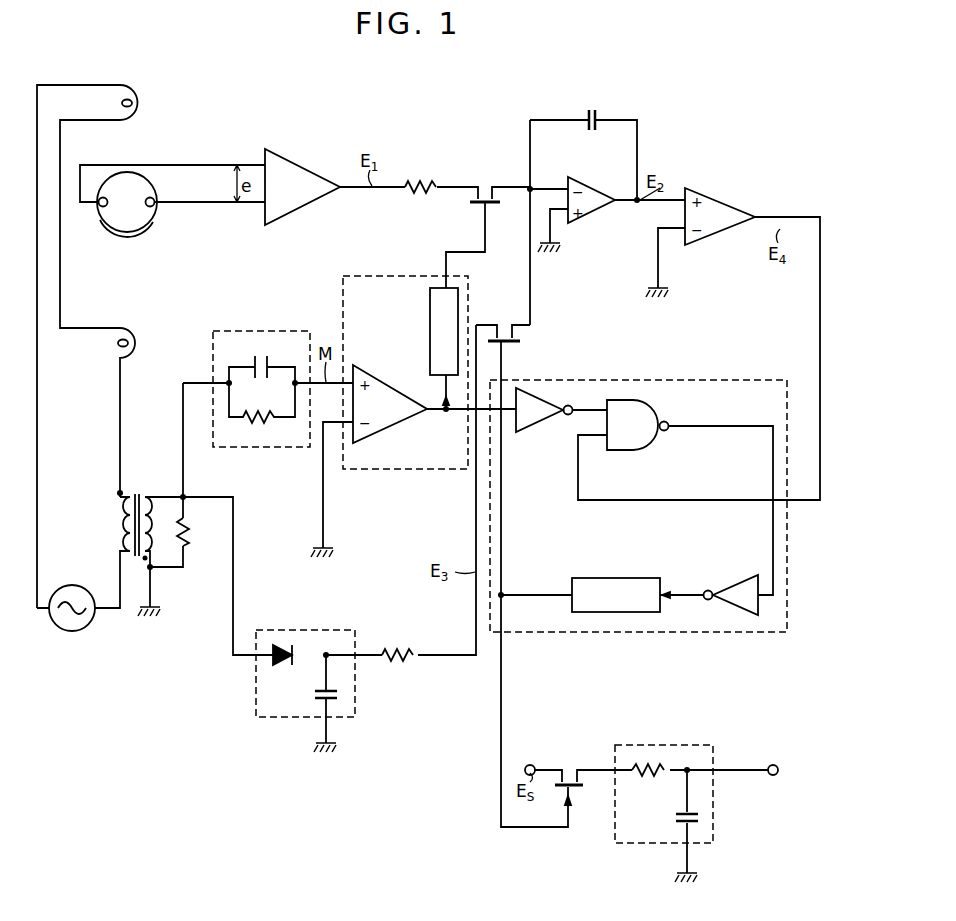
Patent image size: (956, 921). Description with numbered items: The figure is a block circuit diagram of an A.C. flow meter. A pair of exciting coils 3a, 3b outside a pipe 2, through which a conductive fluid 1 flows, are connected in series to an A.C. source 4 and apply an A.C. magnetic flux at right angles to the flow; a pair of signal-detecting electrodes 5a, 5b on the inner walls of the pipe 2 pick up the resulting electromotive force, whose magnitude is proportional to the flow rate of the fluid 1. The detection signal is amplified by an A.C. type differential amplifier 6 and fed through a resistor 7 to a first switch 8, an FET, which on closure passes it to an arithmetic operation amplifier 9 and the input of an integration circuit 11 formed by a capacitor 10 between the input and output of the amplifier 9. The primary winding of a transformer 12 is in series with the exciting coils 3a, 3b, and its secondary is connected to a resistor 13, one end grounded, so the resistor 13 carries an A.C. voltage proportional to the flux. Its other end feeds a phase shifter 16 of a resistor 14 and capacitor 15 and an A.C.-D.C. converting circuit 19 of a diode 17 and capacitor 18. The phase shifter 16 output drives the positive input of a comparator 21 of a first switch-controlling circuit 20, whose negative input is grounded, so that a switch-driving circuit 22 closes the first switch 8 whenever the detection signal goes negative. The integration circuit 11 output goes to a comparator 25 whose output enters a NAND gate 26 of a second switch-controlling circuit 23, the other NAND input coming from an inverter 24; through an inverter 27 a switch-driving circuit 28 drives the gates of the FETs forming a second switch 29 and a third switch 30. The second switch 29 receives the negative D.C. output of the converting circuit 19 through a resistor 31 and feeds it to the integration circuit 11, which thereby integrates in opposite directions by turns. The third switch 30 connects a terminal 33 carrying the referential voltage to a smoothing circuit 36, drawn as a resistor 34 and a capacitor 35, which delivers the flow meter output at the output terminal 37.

The conductive fluid 1 is at (143, 186).
The pipe 2 is at (150, 226).
The exciting coil 3a is at (132, 103).
The exciting coil 3b is at (128, 343).
The A.C. source 4 is at (72, 631).
The signal-detecting electrode 5a is at (155, 200).
The signal-detecting electrode 5b is at (102, 208).
The A.C. type differential amplifier 6 is at (299, 166).
The resistor 7 is at (427, 179).
The first switch 8 is at (487, 185).
The arithmetic operation amplifier 9 is at (589, 190).
The capacitor 10 is at (592, 117).
The integration circuit 11 is at (592, 162).
The transformer 12 is at (135, 498).
The resistor 13 is at (188, 532).
The resistor 14 is at (265, 421).
The capacitor 15 is at (262, 353).
The phase shifter 16 is at (238, 334).
The diode 17 is at (286, 644).
The capacitor 18 is at (345, 696).
The A.C.-D.C. converting circuit 19 is at (274, 716).
The first switch-controlling circuit 20 is at (386, 312).
The comparator 21 is at (373, 436).
The switch-driving circuit 22 is at (430, 343).
The second switch-controlling circuit 23 is at (589, 534).
The inverter 24 is at (543, 422).
The comparator 25 is at (713, 200).
The NAND gate 26 is at (647, 412).
The inverter 27 is at (728, 581).
The switch-driving circuit 28 is at (634, 578).
The second switch 29 is at (517, 333).
The third switch 30 is at (571, 777).
The resistor 31 is at (398, 649).
The terminal 33 is at (528, 769).
The resistor 34 is at (658, 764).
The capacitor 35 is at (701, 820).
The smoothing circuit 36 is at (654, 819).
The output terminal 37 is at (772, 769).